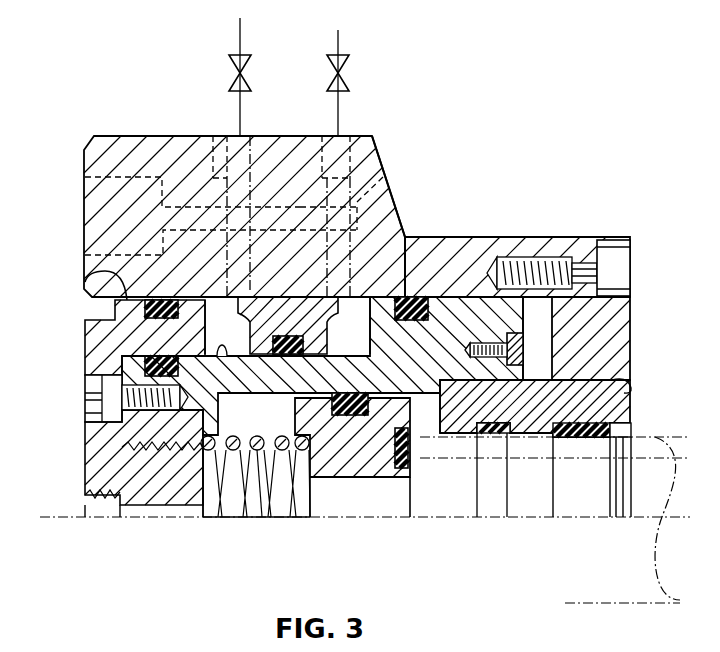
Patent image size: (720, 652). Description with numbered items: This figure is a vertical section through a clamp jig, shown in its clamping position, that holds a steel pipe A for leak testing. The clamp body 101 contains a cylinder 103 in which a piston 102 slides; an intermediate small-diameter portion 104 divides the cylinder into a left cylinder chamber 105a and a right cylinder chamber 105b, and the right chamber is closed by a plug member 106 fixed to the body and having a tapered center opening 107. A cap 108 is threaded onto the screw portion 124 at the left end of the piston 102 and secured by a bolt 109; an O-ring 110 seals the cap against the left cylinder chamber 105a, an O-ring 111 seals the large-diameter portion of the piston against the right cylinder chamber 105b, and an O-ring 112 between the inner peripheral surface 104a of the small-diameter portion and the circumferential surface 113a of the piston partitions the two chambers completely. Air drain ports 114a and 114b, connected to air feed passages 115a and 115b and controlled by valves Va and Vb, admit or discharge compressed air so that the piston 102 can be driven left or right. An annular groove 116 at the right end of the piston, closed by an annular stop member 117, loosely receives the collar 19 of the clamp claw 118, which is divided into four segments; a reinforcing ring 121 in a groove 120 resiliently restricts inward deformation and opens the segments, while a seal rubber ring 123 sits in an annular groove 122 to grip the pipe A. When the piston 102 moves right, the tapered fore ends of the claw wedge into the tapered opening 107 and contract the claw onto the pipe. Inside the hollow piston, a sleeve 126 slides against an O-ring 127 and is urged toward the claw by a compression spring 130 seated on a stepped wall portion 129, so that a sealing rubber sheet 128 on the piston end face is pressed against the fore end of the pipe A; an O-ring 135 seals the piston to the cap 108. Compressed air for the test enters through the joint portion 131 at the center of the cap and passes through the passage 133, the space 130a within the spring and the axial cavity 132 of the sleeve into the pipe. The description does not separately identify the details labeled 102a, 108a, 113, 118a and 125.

The clamp body 101 is at (300, 140).
The piston 102 is at (447, 327).
The fastening screw 102a is at (508, 297).
The cylinder 103 is at (404, 242).
The intermediate small-diameter portion 104 is at (302, 316).
The inner peripheral surface of small-diameter portion 104a is at (262, 355).
The left cylinder chamber 105a is at (220, 307).
The right cylinder chamber 105b is at (352, 310).
The plug member 106 is at (620, 311).
The tapered portion 107 is at (632, 390).
The cap 108 is at (98, 339).
The lip 108a is at (87, 275).
The bolt 109 is at (85, 394).
The O-ring 110 is at (145, 311).
The O-ring 111 is at (420, 297).
The O-ring 112 is at (297, 358).
The spring chamber 113 is at (288, 396).
The circumferential surface 113a is at (222, 357).
The air drain port 114a is at (214, 140).
The air drain port 114b is at (383, 178).
The air feed passage 115a is at (198, 202).
The air feed passage 115b is at (303, 195).
The annular groove 116 is at (455, 359).
The annular stop member 117 is at (528, 378).
The clamp claw 118 is at (583, 392).
The shaft 118a is at (545, 505).
The collar 19 is at (488, 409).
The groove 120 is at (500, 437).
The reinforcing ring 121 is at (486, 437).
The annular groove 122 is at (583, 437).
The seal rubber ring 123 is at (612, 437).
The screw portion 124 is at (130, 447).
The wall 125 is at (427, 398).
The sleeve 126 is at (372, 467).
The O-ring 127 is at (352, 418).
The sealing rubber sheet 128 is at (401, 470).
The stepped wall portion 129 is at (218, 467).
The compression spring 130 is at (262, 470).
The space in compression spring 130a is at (260, 505).
The joint portion 131 is at (85, 505).
The axial cavity 132 is at (326, 510).
The passage 133 is at (153, 512).
The O-ring 135 is at (140, 362).
The valve Va is at (251, 63).
The valve Vb is at (349, 63).
The steel pipe A is at (655, 440).